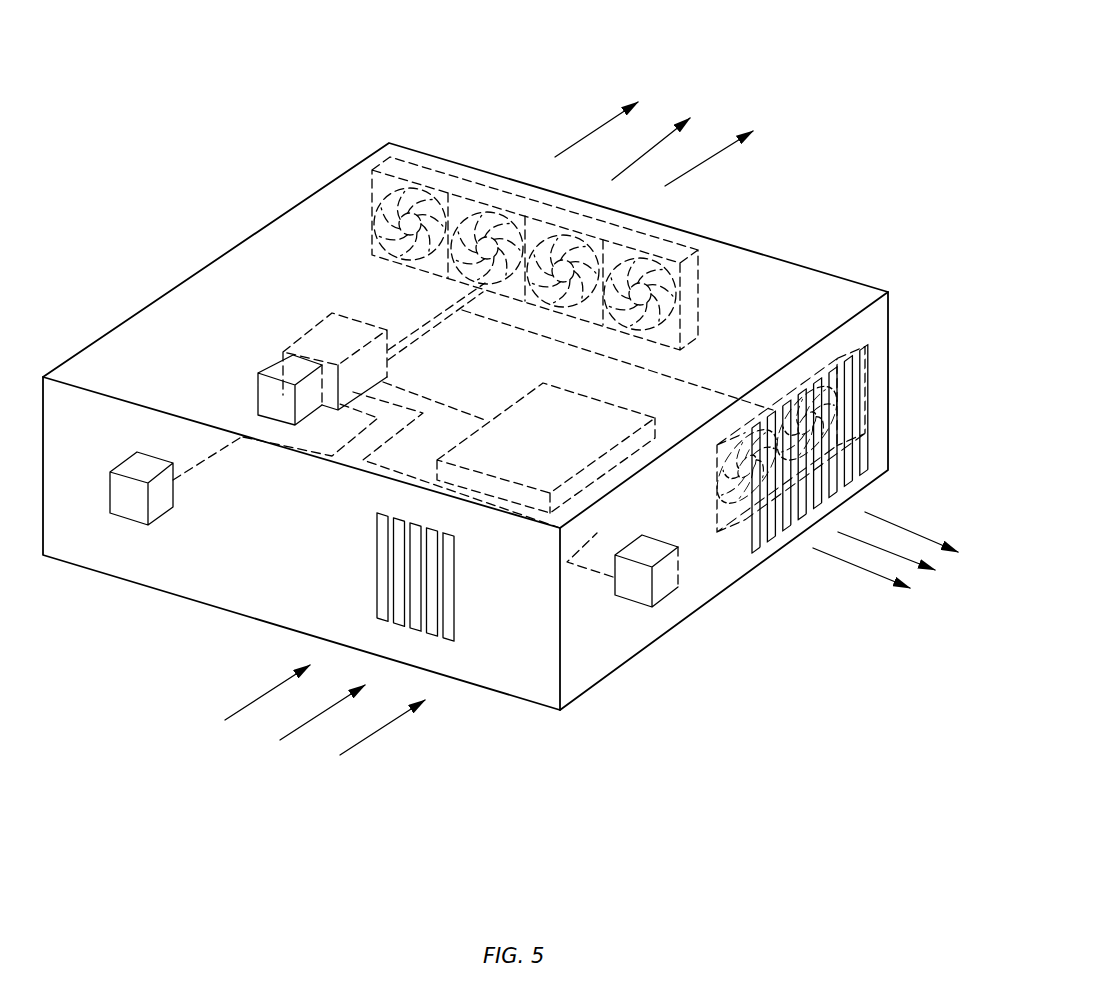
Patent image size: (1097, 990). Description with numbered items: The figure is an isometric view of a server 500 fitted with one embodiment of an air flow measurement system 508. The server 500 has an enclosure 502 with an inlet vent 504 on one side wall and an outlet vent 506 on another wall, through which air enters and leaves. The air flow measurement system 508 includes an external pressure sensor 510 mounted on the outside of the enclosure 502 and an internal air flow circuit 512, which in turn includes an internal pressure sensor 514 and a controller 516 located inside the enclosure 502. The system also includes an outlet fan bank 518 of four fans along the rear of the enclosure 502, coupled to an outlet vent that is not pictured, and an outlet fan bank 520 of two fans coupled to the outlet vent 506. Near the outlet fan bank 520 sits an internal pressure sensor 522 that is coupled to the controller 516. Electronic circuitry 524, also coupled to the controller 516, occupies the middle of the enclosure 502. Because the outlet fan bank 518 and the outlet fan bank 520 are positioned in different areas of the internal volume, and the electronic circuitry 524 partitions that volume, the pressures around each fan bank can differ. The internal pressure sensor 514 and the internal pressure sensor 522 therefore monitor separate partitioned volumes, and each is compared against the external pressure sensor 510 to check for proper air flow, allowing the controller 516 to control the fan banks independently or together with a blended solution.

The server 500 is at (818, 52).
The enclosure 502 is at (346, 172).
The inlet vent 504 is at (452, 655).
The outlet vent 506 is at (791, 560).
The air flow measurement system 508 is at (170, 356).
The external pressure sensor 510 is at (125, 520).
The internal air flow circuit 512 is at (265, 318).
The internal pressure sensor 514 is at (257, 382).
The controller 516 is at (342, 313).
The outlet fan bank 518 is at (700, 292).
The outlet fan bank 520 is at (866, 434).
The internal pressure sensor 522 is at (643, 605).
The electronic circuitry 524 is at (653, 436).